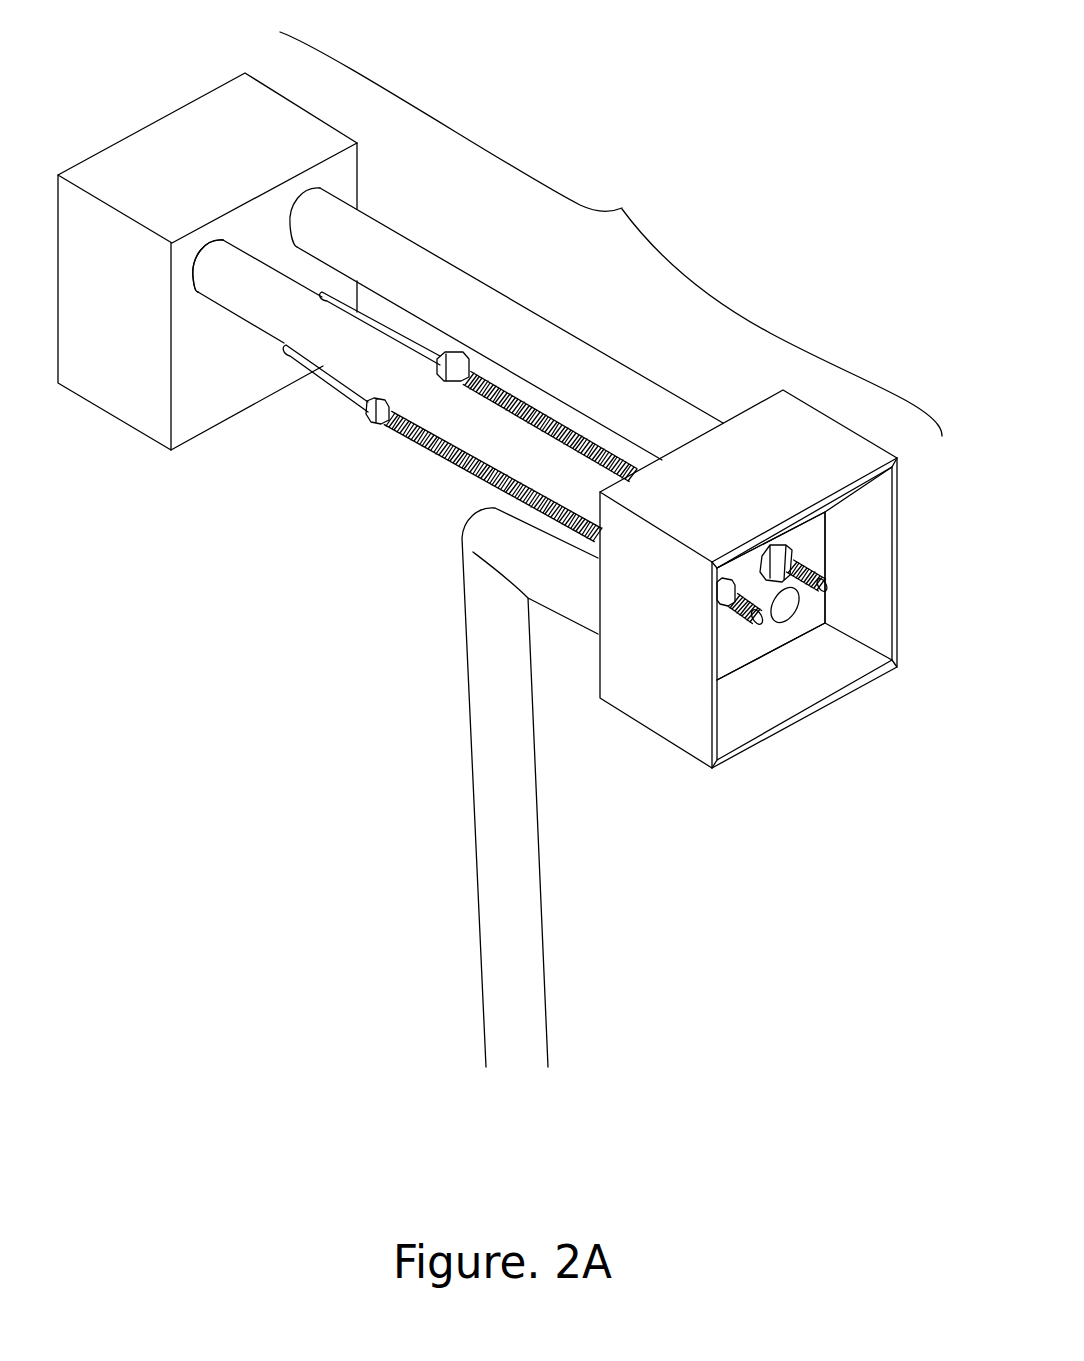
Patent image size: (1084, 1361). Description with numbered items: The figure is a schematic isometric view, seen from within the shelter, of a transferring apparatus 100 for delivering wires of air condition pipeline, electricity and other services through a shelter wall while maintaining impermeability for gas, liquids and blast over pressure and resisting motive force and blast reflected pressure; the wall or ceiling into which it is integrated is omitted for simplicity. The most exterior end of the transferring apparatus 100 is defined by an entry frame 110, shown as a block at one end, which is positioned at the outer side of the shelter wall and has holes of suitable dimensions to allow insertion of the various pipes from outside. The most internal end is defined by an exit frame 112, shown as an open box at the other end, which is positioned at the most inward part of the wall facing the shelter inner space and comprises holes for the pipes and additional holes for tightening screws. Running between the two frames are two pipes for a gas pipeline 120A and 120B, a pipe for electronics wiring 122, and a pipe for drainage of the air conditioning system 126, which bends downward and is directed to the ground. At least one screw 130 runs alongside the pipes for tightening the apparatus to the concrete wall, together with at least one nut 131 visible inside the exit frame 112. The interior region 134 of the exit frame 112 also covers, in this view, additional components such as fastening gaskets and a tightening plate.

The transferring apparatus 100 is at (707, 127).
The entry frame 110 is at (140, 408).
The exit frame 112 is at (765, 619).
The pipe for gas pipeline 120A is at (385, 254).
The pipe for gas pipeline 120B is at (343, 390).
The pipe for electronics wiring 122 is at (237, 261).
The pipe for drainage of the air conditioning system 126 is at (490, 753).
The screw 130 is at (490, 379).
The nut 131 is at (800, 553).
The interior back wall 134 is at (737, 657).